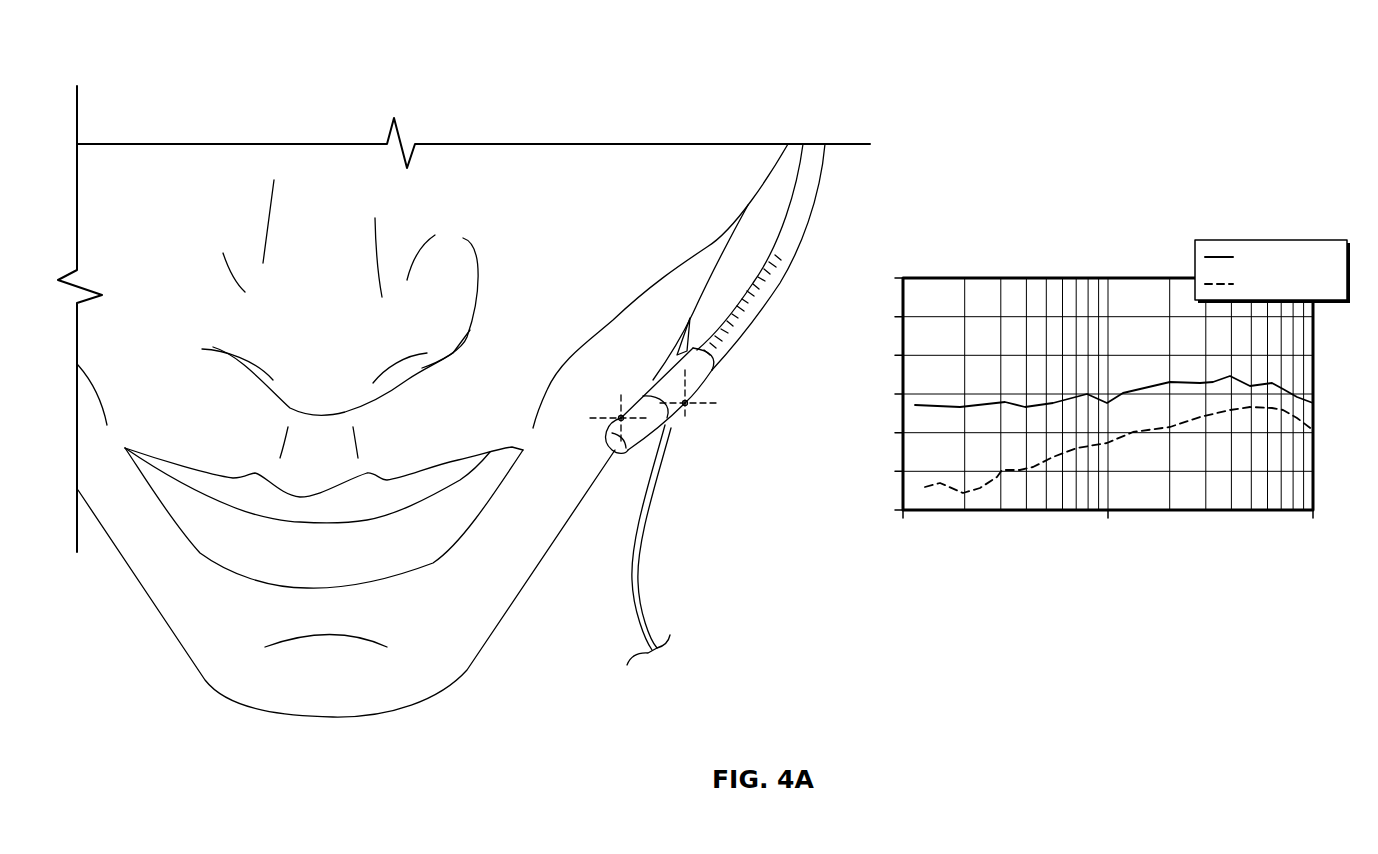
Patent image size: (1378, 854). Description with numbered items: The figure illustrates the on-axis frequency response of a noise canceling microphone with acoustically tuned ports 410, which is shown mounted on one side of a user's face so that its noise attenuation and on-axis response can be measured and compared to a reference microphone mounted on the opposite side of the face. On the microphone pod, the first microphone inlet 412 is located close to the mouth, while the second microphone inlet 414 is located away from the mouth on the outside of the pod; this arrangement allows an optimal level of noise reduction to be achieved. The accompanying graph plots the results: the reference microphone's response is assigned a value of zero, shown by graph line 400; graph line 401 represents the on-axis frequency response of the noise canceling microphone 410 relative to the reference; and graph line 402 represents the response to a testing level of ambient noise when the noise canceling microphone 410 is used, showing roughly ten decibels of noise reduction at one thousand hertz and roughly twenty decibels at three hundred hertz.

The graph line 400 is at (1285, 354).
The graph line 401 is at (1290, 390).
The graph line 402 is at (1302, 414).
The noise canceling microphone with acoustically tuned ports 410 is at (710, 383).
The first microphone inlet 412 is at (619, 416).
The second microphone inlet 414 is at (685, 417).